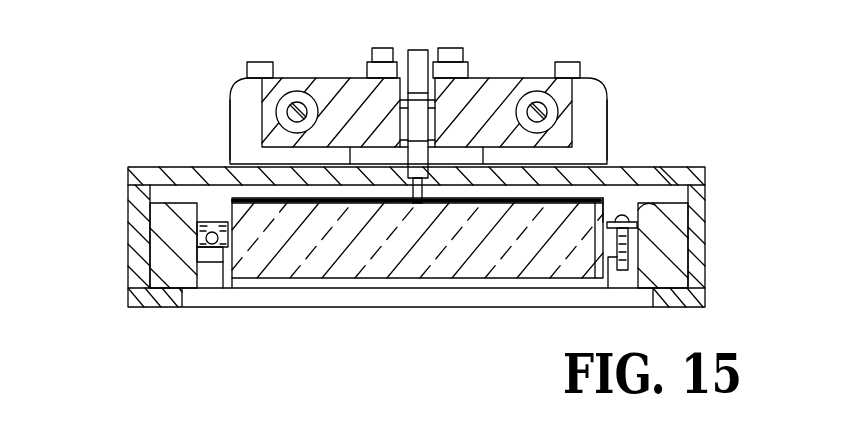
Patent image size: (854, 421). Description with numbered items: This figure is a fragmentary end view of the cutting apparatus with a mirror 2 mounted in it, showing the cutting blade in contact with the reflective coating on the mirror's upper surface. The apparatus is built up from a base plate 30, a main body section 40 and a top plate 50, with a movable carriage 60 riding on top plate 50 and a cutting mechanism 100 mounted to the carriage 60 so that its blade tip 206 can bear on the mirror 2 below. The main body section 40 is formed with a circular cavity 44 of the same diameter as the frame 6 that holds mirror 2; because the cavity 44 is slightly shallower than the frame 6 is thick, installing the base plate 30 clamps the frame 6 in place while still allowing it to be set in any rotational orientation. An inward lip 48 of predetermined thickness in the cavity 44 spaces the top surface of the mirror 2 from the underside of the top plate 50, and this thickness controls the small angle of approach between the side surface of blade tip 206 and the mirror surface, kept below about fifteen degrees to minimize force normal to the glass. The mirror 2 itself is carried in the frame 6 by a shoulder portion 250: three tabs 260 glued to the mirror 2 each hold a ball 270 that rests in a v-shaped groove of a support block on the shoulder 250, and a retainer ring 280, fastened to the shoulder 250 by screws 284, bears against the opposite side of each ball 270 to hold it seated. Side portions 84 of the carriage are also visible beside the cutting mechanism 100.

The mirror 2 is at (318, 265).
The frame 6 is at (165, 228).
The base plate 30 is at (705, 301).
The main body section 40 is at (705, 264).
The circular cavity 44 is at (620, 198).
The inward lip 48 is at (667, 188).
The top plate 50 is at (702, 168).
The movable carriage 60 is at (512, 75).
The housing side wall 84 is at (230, 87).
The cutting mechanism 100 is at (426, 40).
The blade tip 206 is at (418, 205).
The shoulder portion 250 is at (222, 288).
The tab 260 is at (180, 242).
The ball 270 is at (178, 270).
The retainer ring 280 is at (212, 222).
The screw 284 is at (648, 206).